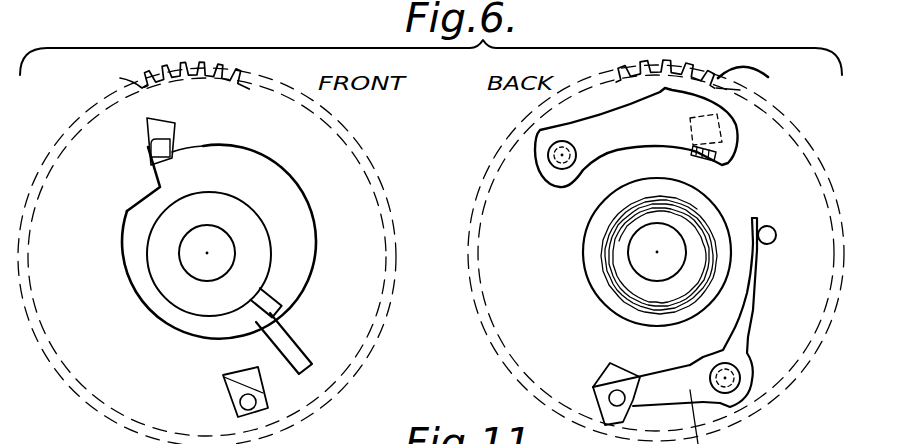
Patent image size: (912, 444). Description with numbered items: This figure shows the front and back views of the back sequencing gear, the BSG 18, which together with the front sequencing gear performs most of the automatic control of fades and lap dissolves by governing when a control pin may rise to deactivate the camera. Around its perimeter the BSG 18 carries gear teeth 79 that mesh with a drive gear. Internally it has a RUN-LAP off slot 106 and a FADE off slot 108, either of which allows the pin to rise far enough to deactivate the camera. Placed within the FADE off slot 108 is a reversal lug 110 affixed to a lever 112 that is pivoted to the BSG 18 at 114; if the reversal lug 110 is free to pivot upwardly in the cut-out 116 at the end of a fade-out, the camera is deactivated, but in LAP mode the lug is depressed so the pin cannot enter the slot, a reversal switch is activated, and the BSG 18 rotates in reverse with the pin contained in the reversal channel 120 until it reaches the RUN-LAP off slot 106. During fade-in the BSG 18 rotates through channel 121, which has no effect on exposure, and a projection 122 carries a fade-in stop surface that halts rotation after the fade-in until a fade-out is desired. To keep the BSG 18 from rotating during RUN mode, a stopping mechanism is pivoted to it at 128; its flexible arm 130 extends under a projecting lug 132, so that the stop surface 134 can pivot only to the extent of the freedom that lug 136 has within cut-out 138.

The BSG (back sequencing gear) 18 is at (367, 160).
The gear teeth 79 is at (143, 76).
The RUN-LAP off slot 106 is at (300, 352).
The FADE off slot 108 is at (174, 148).
The reversal lug 110 is at (150, 148).
The lever 112 is at (640, 106).
The pivot 114 is at (556, 153).
The cut-out 116 is at (690, 123).
The reversal channel 120 is at (253, 165).
The channel 121 is at (133, 268).
The projection 122 is at (283, 300).
The pivot 128 is at (735, 384).
The flexible arm 130 is at (758, 290).
The projecting lug 132 is at (768, 225).
The stop surface 134 is at (630, 408).
The lug 136 is at (232, 401).
The cut-out 138 is at (272, 398).